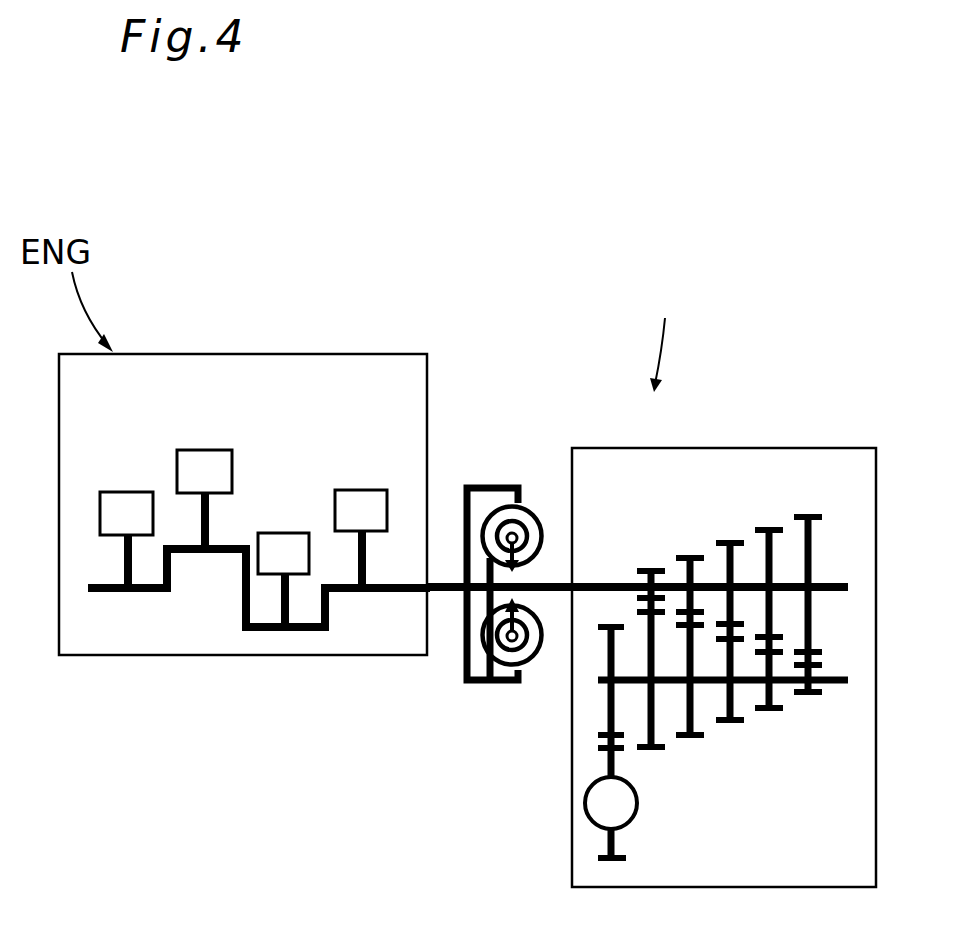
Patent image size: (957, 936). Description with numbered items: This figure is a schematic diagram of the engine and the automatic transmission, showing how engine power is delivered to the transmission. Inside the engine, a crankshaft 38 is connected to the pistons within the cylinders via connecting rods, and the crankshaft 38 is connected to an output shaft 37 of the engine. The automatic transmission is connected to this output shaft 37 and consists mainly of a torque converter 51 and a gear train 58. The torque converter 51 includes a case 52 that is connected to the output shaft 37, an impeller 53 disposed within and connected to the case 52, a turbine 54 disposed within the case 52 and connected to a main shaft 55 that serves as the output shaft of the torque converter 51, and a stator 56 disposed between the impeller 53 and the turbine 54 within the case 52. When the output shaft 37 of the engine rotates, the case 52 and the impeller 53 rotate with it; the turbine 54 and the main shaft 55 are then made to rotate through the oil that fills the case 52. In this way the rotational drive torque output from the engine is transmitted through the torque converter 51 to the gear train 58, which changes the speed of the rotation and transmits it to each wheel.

The output shaft 37 is at (452, 592).
The crankshaft 38 is at (260, 633).
The torque converter 51 is at (497, 396).
The case 52 is at (478, 688).
The impeller 53 is at (504, 489).
The turbine 54 is at (485, 497).
The main shaft 55 is at (556, 605).
The stator 56 is at (523, 693).
The gear train 58 is at (817, 442).